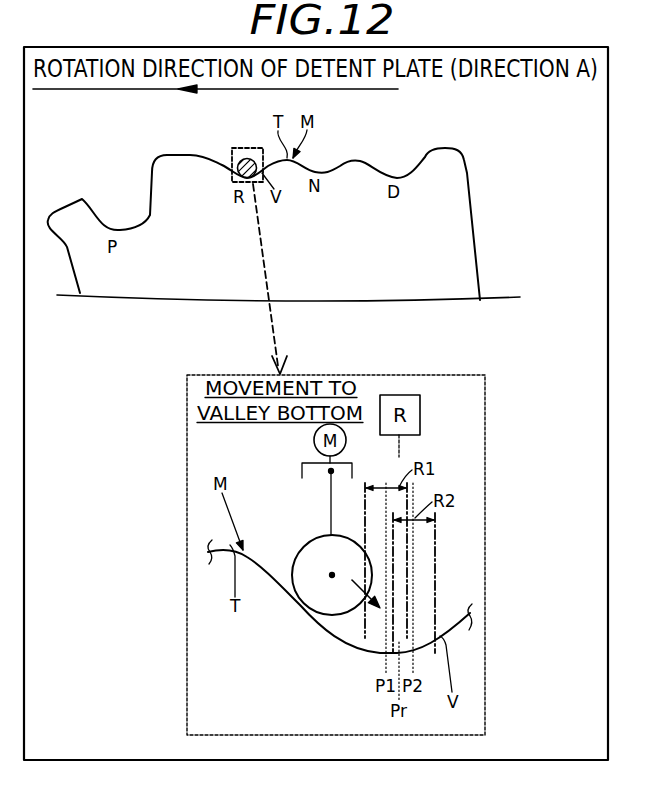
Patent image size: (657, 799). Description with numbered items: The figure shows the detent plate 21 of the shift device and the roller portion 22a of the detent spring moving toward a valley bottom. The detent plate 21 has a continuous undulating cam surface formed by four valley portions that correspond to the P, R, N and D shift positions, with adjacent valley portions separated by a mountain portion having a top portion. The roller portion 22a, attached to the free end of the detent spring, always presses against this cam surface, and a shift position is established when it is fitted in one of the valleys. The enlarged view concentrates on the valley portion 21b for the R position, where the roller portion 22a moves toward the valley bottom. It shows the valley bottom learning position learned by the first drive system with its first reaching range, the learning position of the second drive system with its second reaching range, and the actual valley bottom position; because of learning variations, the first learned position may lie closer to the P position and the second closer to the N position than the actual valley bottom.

The detent plate 21 is at (457, 230).
The valley portion 21b is at (222, 154).
The roller portion 22a is at (245, 157).